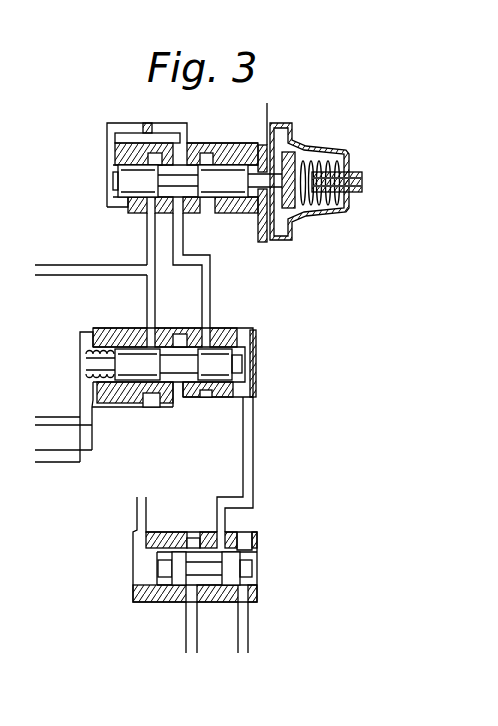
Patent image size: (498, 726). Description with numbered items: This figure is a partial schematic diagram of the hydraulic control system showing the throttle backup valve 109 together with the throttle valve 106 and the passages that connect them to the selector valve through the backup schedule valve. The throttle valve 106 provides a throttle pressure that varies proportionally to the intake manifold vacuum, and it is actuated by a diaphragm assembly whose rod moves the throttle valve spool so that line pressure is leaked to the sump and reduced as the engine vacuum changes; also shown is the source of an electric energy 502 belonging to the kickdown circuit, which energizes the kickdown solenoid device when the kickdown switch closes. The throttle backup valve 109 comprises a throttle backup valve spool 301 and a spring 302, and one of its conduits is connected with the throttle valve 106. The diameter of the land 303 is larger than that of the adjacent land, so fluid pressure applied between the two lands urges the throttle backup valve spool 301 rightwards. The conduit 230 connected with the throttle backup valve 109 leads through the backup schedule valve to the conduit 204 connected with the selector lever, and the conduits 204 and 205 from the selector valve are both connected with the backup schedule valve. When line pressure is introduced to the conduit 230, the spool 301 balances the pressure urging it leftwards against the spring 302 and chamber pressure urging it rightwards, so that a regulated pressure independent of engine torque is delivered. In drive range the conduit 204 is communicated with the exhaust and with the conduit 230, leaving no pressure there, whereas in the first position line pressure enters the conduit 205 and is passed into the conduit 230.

The throttle valve 106 is at (107, 171).
The source of an electric energy 502 is at (340, 140).
The spring 302 is at (93, 338).
The throttle backup valve 109 is at (314, 385).
The throttle backup valve spool 301 is at (178, 362).
The conduit 230 is at (253, 457).
The land 303 is at (176, 598).
The conduit 204 is at (189, 658).
The conduit 205 is at (243, 658).